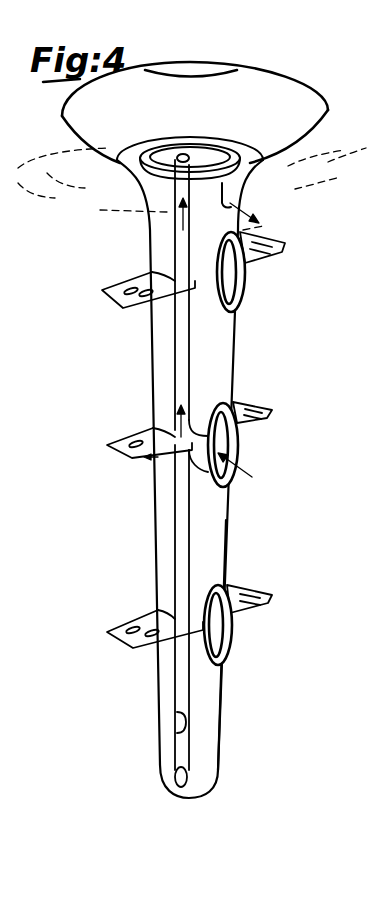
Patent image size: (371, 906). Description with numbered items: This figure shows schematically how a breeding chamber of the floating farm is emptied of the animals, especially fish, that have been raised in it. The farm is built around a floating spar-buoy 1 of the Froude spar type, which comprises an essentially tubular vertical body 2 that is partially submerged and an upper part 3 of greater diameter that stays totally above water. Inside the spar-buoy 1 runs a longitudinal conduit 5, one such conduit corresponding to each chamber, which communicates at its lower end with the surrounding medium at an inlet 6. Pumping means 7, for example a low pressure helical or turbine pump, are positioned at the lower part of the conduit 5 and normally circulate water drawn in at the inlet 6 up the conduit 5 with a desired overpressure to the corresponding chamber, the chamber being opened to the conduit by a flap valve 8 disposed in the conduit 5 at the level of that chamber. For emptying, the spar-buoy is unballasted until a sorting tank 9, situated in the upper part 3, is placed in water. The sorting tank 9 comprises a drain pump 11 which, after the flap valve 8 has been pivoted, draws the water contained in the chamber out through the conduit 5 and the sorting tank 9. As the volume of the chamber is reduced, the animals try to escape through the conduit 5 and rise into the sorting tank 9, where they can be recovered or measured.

The spar-buoy 1 is at (242, 362).
The tubular vertical body 2 is at (212, 546).
The upper part 3 is at (312, 134).
The longitudinal conduit 5 is at (180, 362).
The inlet 6 is at (179, 786).
The pumping means 7 is at (184, 730).
The flap valve 8 is at (178, 448).
The sorting tank 9 is at (133, 156).
The drain pump 11 is at (224, 191).